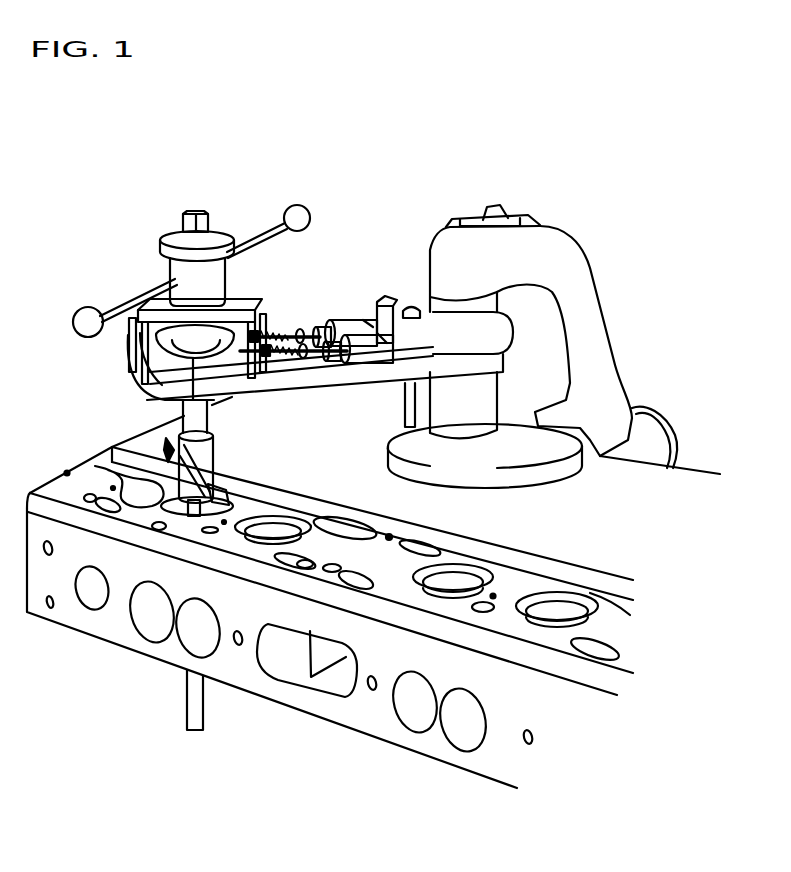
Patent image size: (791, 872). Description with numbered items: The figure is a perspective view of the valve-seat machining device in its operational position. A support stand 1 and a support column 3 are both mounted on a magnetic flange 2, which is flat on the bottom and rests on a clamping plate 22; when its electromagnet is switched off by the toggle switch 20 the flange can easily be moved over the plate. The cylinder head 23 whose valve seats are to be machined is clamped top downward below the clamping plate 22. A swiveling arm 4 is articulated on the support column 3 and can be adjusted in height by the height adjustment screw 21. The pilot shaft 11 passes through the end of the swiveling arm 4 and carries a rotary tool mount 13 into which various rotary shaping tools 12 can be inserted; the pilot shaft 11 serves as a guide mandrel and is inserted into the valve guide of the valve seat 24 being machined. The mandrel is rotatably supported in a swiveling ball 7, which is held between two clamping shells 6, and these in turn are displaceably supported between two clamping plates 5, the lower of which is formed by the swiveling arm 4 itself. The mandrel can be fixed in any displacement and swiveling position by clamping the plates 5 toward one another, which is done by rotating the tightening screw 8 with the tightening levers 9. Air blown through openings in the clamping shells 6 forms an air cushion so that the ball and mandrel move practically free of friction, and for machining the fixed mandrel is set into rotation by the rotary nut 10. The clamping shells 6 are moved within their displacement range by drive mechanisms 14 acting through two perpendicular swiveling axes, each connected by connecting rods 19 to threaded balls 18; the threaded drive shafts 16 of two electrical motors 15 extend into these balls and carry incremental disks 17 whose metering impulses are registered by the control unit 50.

The support stand 1 is at (583, 293).
The magnetic flange 2 is at (543, 468).
The support column 3 is at (480, 390).
The swiveling arm 4 is at (384, 372).
The clamping plates 5 is at (127, 352).
The clamping shells 6 is at (140, 383).
The swiveling ball 7 is at (157, 383).
The tightening screw 8 is at (172, 273).
The tightening levers 9 is at (133, 368).
The rotary nut 10 is at (183, 228).
The pilot shaft 11 is at (190, 702).
The rotary shaping tool 12 is at (228, 500).
The rotary tool mount 13 is at (213, 453).
The drive mechanisms 14 is at (322, 272).
The electrical motors 15 is at (350, 327).
The drive shafts 16 is at (302, 331).
The incremental disks 17 is at (333, 365).
The threaded balls 18 is at (292, 357).
The connecting rods 19 is at (266, 330).
The toggle switch 20 is at (483, 208).
The height adjustment screw 21 is at (408, 307).
The clamping plate 22 is at (533, 531).
The cylinder head 23 is at (377, 660).
The valve seat 24 is at (108, 466).
The control unit 50 is at (368, 298).